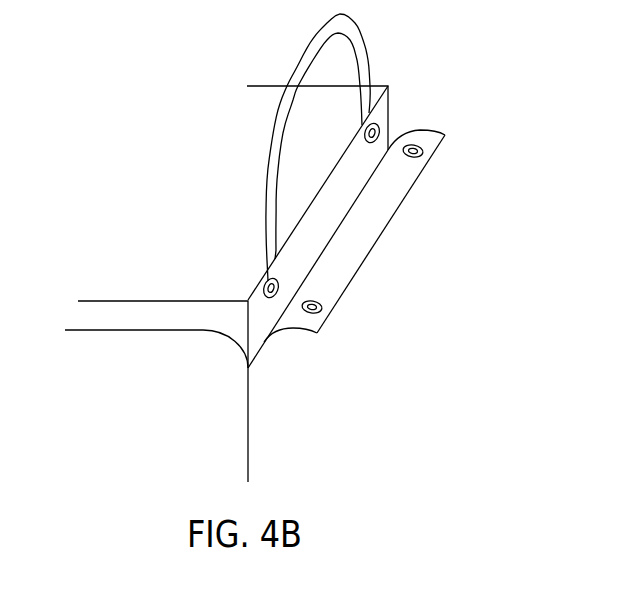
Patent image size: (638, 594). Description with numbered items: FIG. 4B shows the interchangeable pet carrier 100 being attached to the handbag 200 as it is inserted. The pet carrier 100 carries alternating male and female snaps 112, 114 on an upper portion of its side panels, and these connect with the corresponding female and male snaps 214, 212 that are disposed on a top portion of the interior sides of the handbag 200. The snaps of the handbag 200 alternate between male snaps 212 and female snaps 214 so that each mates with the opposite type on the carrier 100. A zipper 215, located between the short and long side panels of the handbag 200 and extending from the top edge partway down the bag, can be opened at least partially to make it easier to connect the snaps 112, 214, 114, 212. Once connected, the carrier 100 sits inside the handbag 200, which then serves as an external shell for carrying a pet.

The interchangeable pet carrier 100 is at (138, 273).
The male snap 112 is at (378, 124).
The female snap 114 is at (263, 283).
The handbag 200 is at (93, 390).
The male snap 212 is at (322, 311).
The female snap 214 is at (423, 153).
The zipper 215 is at (250, 374).